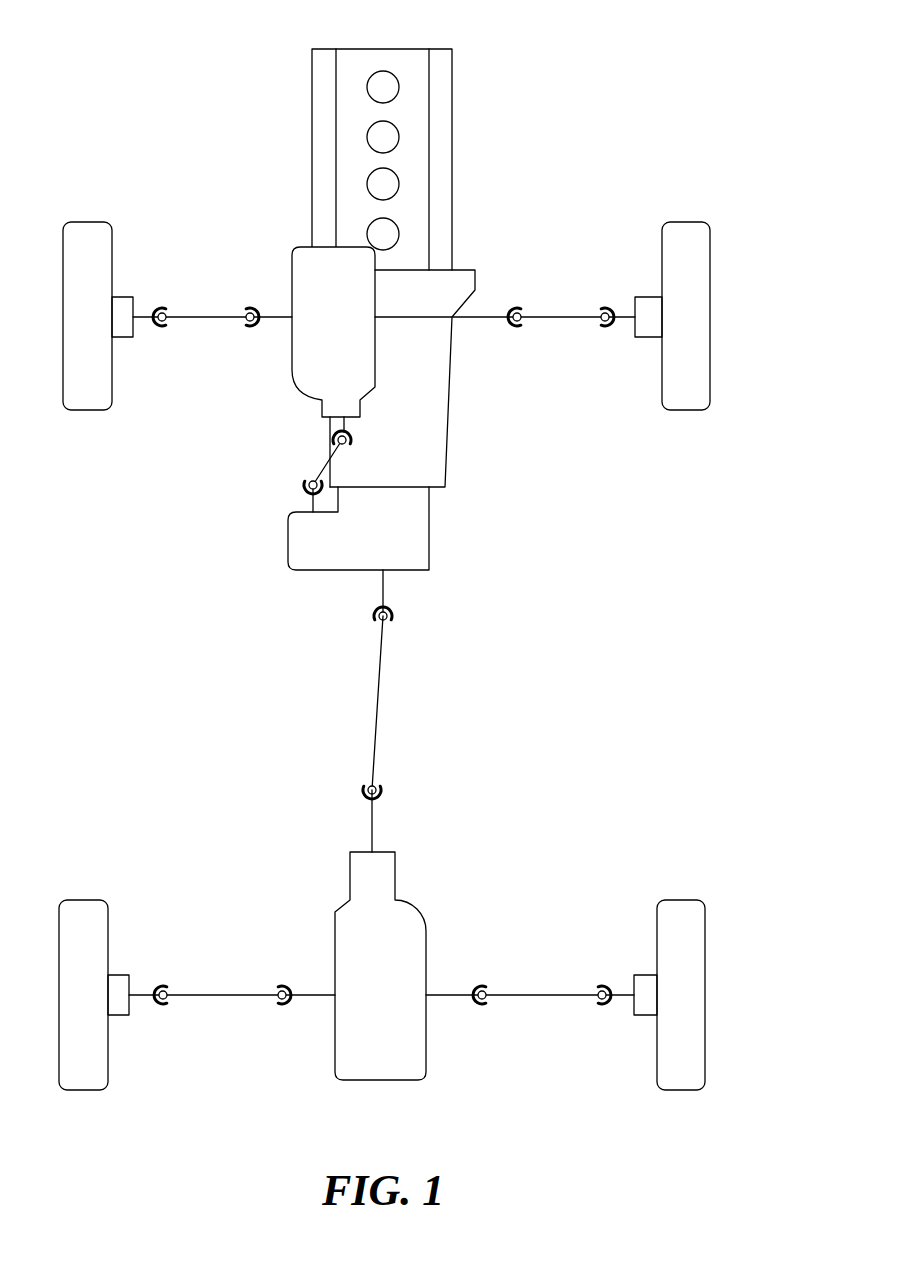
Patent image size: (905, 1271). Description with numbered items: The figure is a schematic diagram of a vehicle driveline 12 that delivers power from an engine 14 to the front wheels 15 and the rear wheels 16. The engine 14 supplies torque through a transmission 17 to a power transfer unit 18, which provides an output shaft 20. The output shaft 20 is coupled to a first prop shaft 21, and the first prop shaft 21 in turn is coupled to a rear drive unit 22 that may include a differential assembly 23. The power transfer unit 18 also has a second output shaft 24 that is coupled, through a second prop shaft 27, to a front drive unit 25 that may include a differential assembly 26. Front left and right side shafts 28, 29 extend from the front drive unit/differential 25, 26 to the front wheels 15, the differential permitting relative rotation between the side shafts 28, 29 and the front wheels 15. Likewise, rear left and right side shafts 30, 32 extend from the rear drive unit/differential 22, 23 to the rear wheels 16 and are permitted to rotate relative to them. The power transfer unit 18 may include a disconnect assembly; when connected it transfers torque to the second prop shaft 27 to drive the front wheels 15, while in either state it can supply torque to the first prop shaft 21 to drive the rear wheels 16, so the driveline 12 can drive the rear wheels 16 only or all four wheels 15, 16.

The vehicle driveline 12 is at (570, 80).
The engine 14 is at (452, 97).
The front wheels 15 is at (90, 222).
The rear wheels 16 is at (88, 900).
The transmission 17 is at (450, 380).
The power transfer unit 18 is at (429, 538).
The output shaft 20 is at (383, 597).
The first prop shaft 21 is at (381, 662).
The rear drive unit 22 is at (403, 998).
The differential assembly 23 is at (378, 1082).
The output shaft 24 is at (311, 503).
The front drive unit 25 is at (282, 367).
The differential assembly 26 is at (292, 360).
The second prop shaft 27 is at (330, 466).
The front left side shaft 28 is at (214, 306).
The front right side shaft 29 is at (563, 306).
The rear left side shaft 30 is at (223, 984).
The rear right side shaft 32 is at (544, 983).